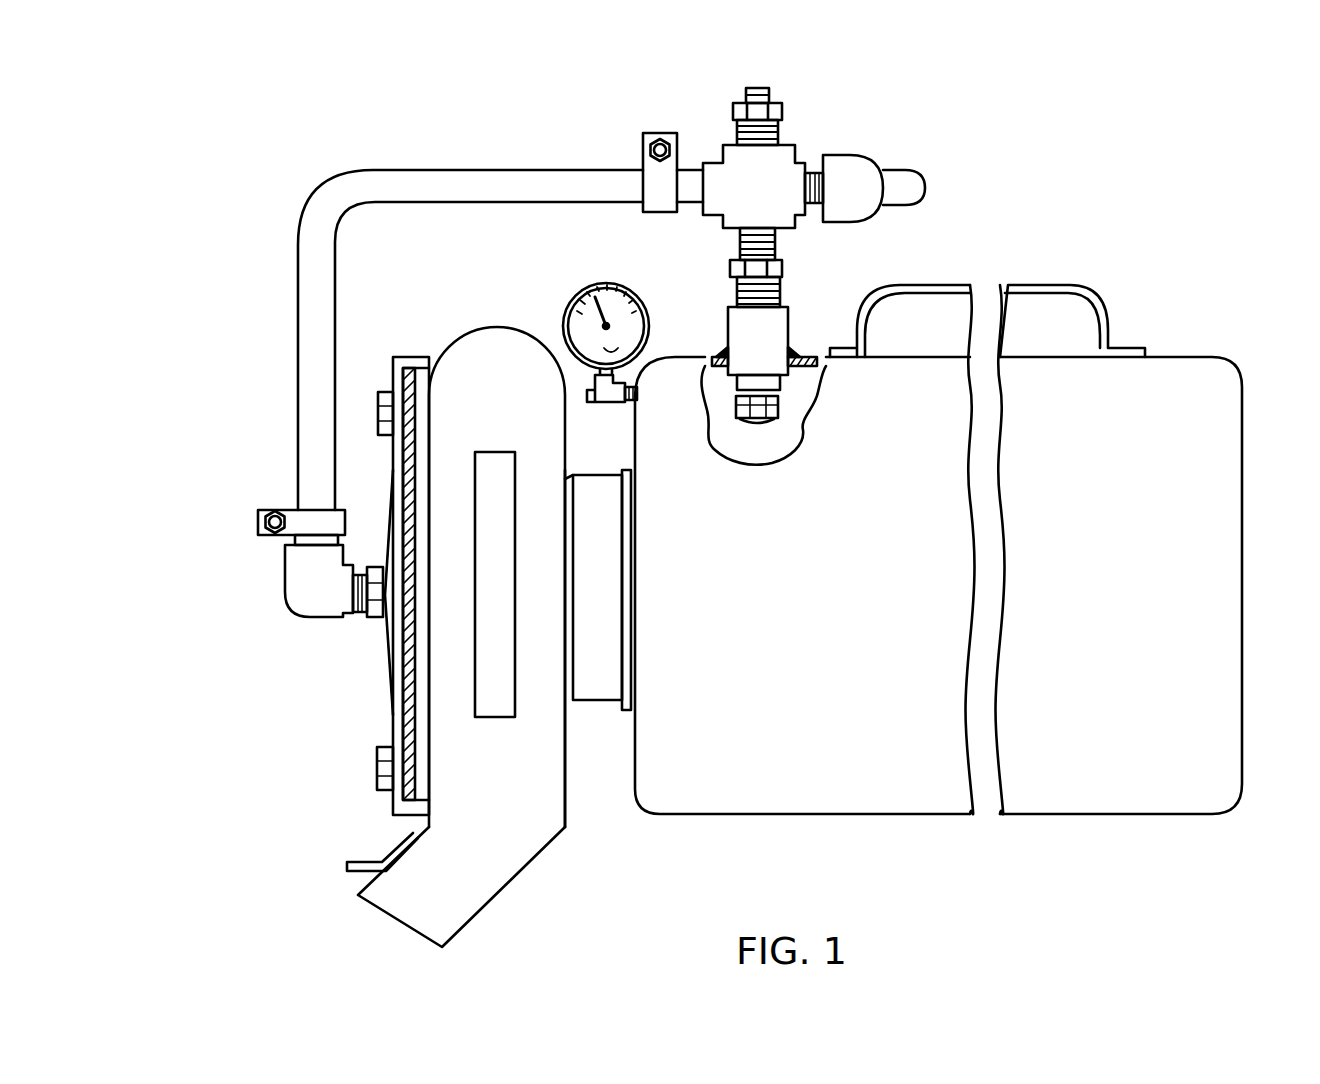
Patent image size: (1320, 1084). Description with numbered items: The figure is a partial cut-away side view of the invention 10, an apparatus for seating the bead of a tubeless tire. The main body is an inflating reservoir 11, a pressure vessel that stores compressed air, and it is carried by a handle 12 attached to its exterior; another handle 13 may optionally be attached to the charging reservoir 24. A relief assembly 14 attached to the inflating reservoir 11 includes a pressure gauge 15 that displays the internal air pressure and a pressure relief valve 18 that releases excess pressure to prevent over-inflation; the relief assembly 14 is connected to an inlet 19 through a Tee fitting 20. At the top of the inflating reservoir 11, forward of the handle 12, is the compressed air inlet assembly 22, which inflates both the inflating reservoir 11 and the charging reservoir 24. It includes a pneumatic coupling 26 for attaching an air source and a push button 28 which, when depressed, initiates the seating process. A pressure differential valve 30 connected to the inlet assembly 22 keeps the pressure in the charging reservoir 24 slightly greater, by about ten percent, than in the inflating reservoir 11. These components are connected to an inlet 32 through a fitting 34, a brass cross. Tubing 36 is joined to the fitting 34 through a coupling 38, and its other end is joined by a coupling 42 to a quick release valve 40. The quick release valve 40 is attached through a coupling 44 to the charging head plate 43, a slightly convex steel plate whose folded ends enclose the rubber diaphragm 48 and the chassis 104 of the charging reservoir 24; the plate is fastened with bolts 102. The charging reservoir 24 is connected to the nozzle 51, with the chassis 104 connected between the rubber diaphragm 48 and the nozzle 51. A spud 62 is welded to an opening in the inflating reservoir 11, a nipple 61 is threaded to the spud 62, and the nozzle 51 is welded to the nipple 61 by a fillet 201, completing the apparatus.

The invention 10 is at (676, 893).
The inflating reservoir 11 is at (1170, 385).
The handle 12 is at (1095, 300).
The handle 13 is at (497, 713).
The relief assembly 14 is at (596, 280).
The pressure gauge 15 is at (645, 300).
The pressure relief valve 18 is at (553, 347).
The inlet 19 is at (637, 390).
The Tee fitting 20 is at (605, 407).
The compressed air inlet assembly 22 is at (795, 316).
The charging reservoir 24 is at (380, 686).
The pneumatic coupling 26 is at (770, 95).
The push button 28 is at (843, 158).
The pressure differential valve 30 is at (772, 413).
The inlet 32 is at (815, 379).
The fitting 34 is at (782, 167).
The tubing 36 is at (477, 170).
The coupling 38 is at (643, 150).
The quick release valve 40 is at (285, 578).
The coupling 42 is at (300, 520).
The charging head plate 43 is at (385, 640).
The coupling 44 is at (378, 580).
The rubber diaphragm 48 is at (416, 370).
The nozzle 51 is at (500, 870).
The nipple 61 is at (604, 655).
The spud 62 is at (628, 582).
The bolts 102 is at (380, 405).
The chassis 104 is at (420, 425).
The fillet 201 is at (571, 706).